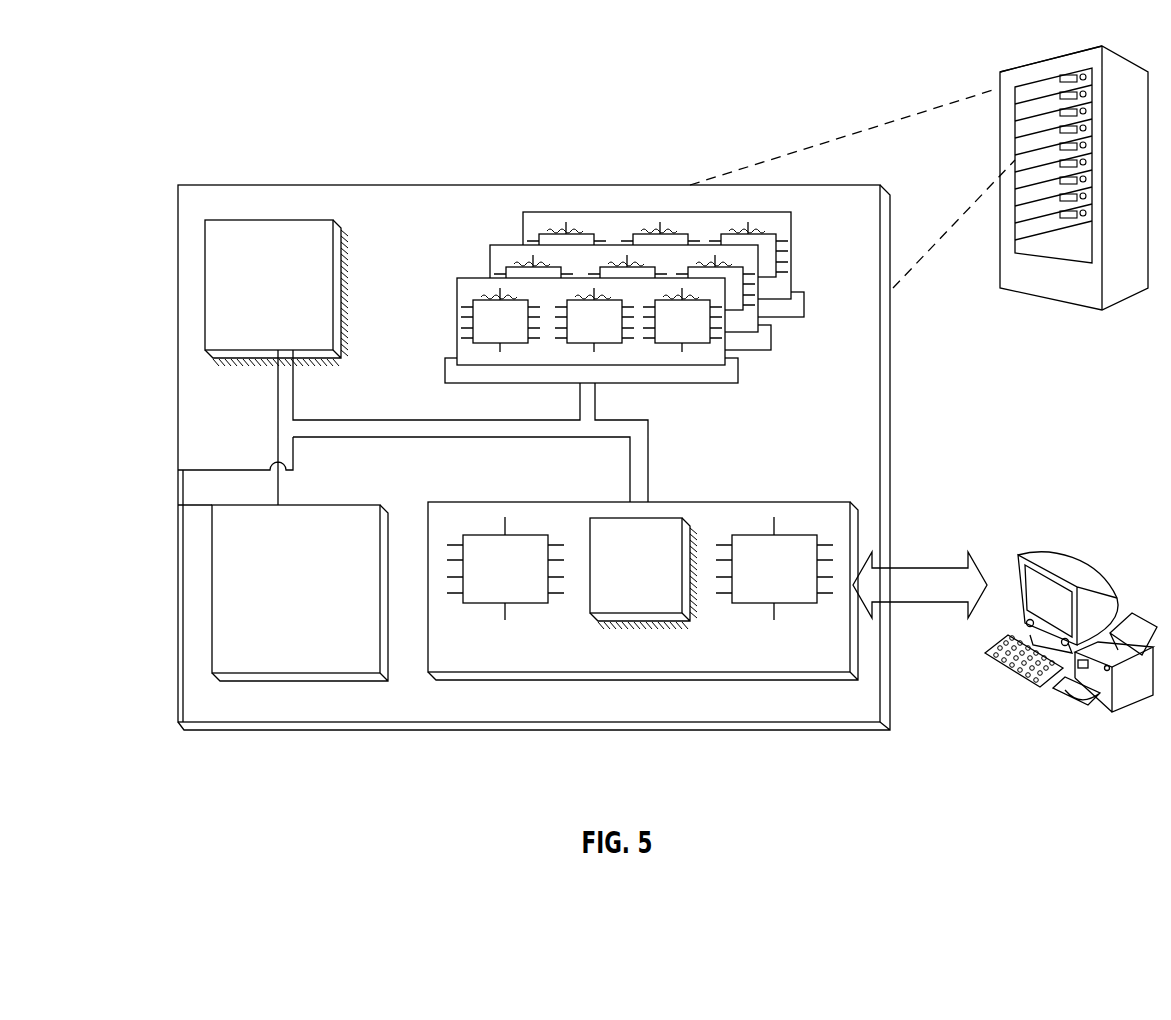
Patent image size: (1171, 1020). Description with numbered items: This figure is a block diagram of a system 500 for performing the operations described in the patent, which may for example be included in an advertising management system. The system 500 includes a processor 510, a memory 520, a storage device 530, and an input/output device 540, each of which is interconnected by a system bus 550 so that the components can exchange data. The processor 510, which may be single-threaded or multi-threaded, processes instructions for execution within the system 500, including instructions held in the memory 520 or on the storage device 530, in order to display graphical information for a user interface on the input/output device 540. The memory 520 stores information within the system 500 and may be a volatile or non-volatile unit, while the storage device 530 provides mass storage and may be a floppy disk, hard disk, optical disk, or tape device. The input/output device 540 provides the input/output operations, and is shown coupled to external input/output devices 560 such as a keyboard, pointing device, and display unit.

The system 500 is at (290, 116).
The processor 510 is at (276, 293).
The memory 520 is at (798, 344).
The storage device 530 is at (300, 593).
The input/output device 540 is at (790, 501).
The bus 550 is at (455, 437).
The input/output devices 560 is at (1018, 556).